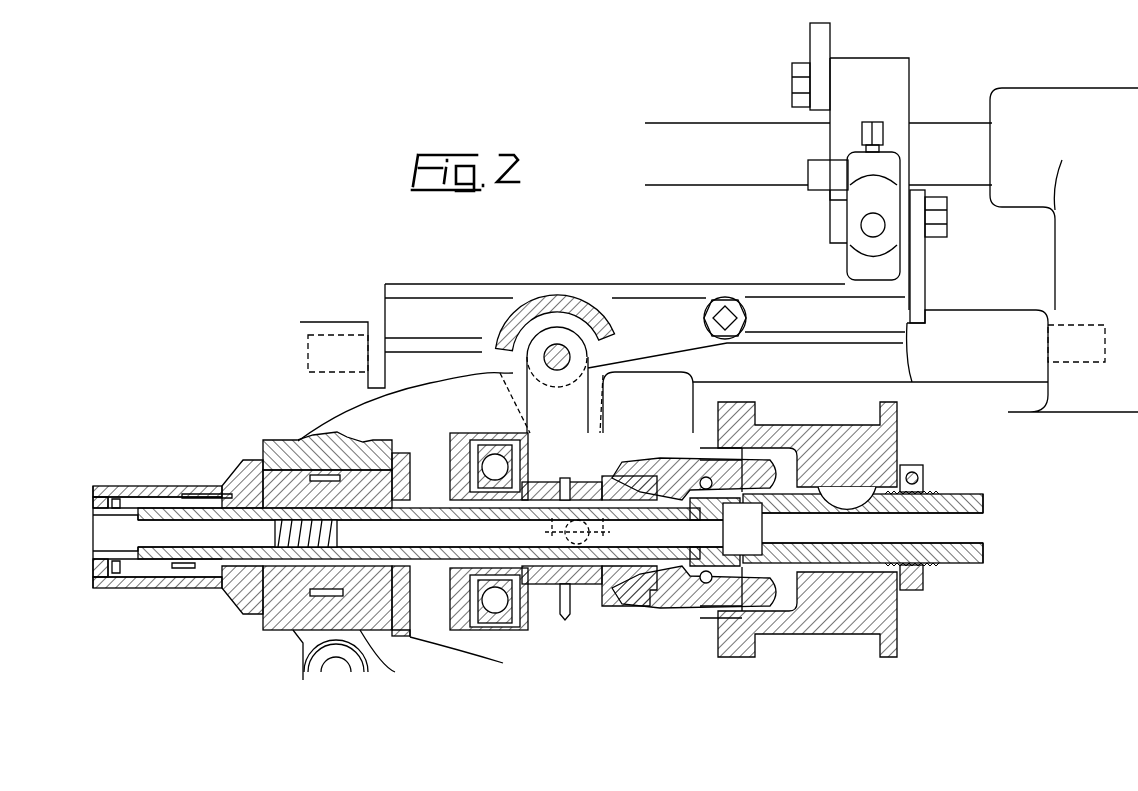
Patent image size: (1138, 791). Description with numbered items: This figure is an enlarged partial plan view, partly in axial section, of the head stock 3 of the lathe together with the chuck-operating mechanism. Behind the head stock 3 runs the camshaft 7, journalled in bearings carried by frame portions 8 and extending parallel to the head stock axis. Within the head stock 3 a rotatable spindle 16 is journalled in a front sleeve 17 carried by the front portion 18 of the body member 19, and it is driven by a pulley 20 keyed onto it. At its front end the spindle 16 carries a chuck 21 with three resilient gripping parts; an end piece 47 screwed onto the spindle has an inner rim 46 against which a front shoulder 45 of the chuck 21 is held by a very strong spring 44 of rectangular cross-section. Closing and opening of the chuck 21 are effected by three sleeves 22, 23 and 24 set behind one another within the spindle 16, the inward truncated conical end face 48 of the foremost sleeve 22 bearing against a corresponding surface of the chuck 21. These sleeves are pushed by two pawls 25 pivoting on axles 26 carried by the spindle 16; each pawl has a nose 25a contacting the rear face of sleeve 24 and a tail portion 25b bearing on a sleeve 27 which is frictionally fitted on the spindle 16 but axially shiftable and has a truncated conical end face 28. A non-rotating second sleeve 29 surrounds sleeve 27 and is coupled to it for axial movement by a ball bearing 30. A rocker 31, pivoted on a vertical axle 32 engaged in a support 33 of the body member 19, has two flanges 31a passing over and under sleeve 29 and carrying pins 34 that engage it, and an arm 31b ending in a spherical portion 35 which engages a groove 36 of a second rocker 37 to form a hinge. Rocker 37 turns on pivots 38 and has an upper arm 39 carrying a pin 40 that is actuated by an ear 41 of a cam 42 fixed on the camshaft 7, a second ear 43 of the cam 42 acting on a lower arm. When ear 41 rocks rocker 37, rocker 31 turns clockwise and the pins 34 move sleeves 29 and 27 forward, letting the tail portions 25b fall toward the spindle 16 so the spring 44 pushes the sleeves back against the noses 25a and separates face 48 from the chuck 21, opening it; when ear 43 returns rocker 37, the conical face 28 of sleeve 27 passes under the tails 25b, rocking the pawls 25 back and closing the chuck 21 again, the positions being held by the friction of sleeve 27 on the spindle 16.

The head stock 3 is at (363, 416).
The camshaft 7 is at (943, 140).
The frame portions 8 is at (1045, 125).
The spindle 16 is at (210, 492).
The front sleeve 17 is at (282, 632).
The front portion 18 is at (296, 640).
The body member 19 is at (458, 387).
The pulley 20 is at (820, 634).
The chuck 21 is at (100, 588).
The sleeve 22 is at (168, 560).
The sleeve 23 is at (436, 560).
The sleeve 24 is at (688, 550).
The pawls 25 is at (660, 470).
The nose 25a is at (703, 505).
The tail portion 25b is at (624, 466).
The axles 26 is at (722, 498).
The sleeve 27 is at (604, 606).
The truncated conical end face 28 is at (670, 592).
The second sleeve 29 is at (530, 628).
The ball bearing 30 is at (497, 606).
The rocker 31 is at (525, 310).
The flanges 31a is at (552, 534).
The arm 31b is at (662, 312).
The vertical axle 32 is at (552, 350).
The support 33 is at (566, 335).
The pins 34 is at (600, 533).
The spherical portion 35 is at (722, 298).
The groove 36 is at (786, 315).
The rocker 37 is at (1005, 330).
The pivots 38 is at (1083, 325).
The upper arm 39 is at (858, 207).
The pin 40 is at (812, 170).
The ear 41 is at (810, 37).
The cam 42 is at (860, 72).
The ear 43 is at (928, 300).
The spring 44 is at (273, 534).
The front shoulder 45 is at (120, 577).
The inner rim 46 is at (101, 487).
The end piece 47 is at (130, 492).
The truncated conical end face 48 is at (150, 505).